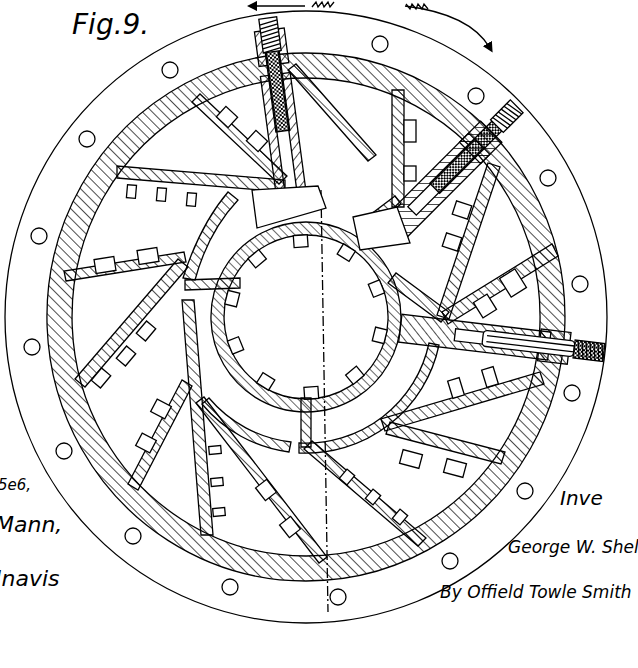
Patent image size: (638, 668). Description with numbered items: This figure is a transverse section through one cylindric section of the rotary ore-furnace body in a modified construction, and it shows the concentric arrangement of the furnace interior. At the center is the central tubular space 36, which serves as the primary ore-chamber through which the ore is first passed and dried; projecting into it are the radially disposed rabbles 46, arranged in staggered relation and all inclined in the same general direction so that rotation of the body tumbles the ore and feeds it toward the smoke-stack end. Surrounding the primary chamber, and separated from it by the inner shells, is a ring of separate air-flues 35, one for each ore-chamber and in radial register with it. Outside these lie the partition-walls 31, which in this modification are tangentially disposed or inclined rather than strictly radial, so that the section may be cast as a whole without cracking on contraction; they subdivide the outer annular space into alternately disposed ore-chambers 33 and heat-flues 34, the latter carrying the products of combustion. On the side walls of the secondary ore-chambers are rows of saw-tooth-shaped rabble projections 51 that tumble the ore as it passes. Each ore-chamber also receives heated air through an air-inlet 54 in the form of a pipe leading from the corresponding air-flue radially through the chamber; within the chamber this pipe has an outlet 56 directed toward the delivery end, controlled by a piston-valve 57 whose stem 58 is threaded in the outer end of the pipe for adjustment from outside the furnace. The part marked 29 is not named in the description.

The shaft axis / center line 29 is at (354, 266).
The partition-walls 31 is at (381, 228).
The ore-chambers 33 is at (386, 148).
The heat-flues 34 is at (311, 332).
The air-flues 35 is at (289, 207).
The central tubular space 36 is at (306, 317).
The rabbles 46 is at (333, 253).
The rabble projections 51 is at (190, 206).
The air-inlet 54 is at (303, 214).
The outlet 56 is at (278, 143).
The piston-valve 57 is at (268, 108).
The stem 58 is at (520, 150).